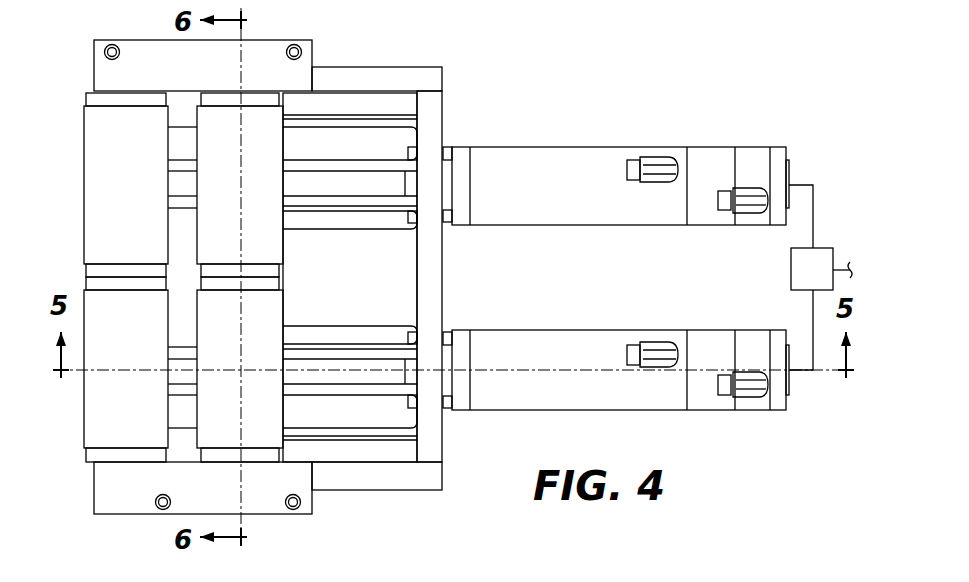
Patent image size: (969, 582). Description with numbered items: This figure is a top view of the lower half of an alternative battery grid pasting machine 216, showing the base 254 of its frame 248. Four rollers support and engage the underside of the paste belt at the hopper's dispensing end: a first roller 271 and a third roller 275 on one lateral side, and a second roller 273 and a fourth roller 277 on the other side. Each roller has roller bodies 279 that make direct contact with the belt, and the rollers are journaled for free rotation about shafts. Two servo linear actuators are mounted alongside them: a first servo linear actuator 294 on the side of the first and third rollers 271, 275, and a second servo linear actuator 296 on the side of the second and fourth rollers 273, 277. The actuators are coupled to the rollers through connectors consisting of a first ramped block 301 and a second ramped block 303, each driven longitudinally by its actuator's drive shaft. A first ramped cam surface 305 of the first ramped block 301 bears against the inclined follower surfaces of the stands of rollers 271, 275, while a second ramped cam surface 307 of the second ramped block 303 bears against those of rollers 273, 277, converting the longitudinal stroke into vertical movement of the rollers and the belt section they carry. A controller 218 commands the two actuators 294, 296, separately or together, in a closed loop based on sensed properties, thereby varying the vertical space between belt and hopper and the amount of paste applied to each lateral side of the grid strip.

The battery grid pasting machine 216 is at (718, 63).
The controller 218 is at (827, 248).
The frame 248 is at (386, 492).
The base 254 is at (428, 492).
The first roller 271 is at (284, 314).
The second roller 273 is at (285, 237).
The third roller 275 is at (83, 420).
The fourth roller 277 is at (83, 211).
The roller bodies 279 is at (259, 155).
The first servo linear actuator 294 is at (595, 412).
The second servo linear actuator 296 is at (576, 228).
The first ramped block 301 is at (359, 371).
The second ramped block 303 is at (314, 186).
The first ramped cam surface 305 is at (330, 368).
The second ramped cam surface 307 is at (368, 187).